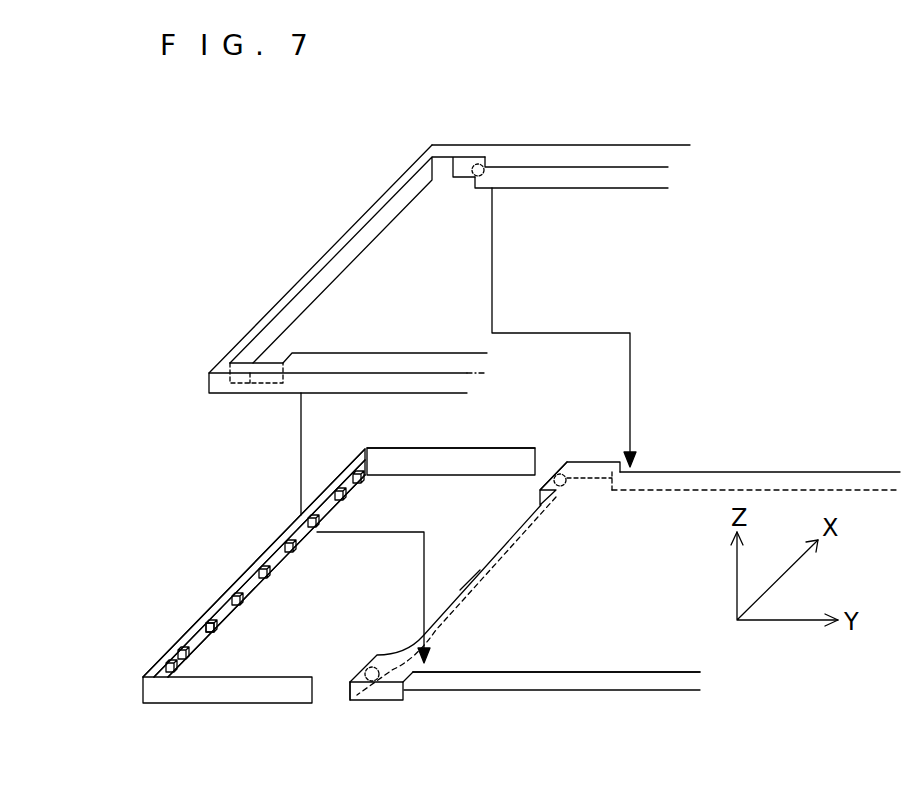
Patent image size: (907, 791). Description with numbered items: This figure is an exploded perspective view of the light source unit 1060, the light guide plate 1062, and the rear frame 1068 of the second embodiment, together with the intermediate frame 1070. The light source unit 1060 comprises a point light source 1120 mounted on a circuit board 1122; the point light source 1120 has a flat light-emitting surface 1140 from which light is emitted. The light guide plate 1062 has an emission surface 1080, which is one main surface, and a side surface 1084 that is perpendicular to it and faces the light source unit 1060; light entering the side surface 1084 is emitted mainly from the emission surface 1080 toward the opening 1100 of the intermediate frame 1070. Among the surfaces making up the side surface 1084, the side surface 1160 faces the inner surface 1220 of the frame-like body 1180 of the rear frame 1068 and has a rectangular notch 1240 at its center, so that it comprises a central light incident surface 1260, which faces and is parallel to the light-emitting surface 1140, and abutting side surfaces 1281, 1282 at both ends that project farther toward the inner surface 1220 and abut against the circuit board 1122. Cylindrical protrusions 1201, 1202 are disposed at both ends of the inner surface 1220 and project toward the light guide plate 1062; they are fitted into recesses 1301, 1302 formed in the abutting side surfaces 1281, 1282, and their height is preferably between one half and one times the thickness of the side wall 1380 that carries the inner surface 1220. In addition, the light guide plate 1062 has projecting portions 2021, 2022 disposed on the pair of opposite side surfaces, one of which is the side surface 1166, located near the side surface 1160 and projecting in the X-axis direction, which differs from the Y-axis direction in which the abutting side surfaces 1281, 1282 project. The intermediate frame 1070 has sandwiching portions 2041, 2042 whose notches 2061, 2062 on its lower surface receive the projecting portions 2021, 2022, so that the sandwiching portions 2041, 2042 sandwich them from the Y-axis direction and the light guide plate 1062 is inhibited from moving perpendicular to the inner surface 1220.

The intermediate frame 1070 is at (625, 145).
The opening 1100 is at (620, 188).
The sandwiching portion 2041 is at (444, 190).
The notch 2061 is at (475, 168).
The sandwiching portion 2042 is at (286, 348).
The notch 2062 is at (286, 352).
The frame-like body 1180 is at (405, 448).
The rear frame 1068 is at (470, 448).
The abutting side surface 1281 is at (556, 452).
The projecting portion 2021 is at (590, 460).
The light guide plate 1062 is at (833, 470).
The recess 1301 is at (566, 485).
The protrusion 1201 is at (365, 476).
The side surface 1160 is at (515, 517).
The light incident surface 1260 is at (502, 535).
The notch 1240 is at (463, 587).
The inner surface 1220 is at (265, 550).
The light source unit 1060 is at (236, 563).
The side wall 1380 is at (218, 602).
The circuit board 1122 is at (195, 632).
The point light source 1120 is at (230, 603).
The light-emitting surface 1140 is at (215, 626).
The protrusion 1202 is at (183, 670).
The recess 1302 is at (377, 667).
The emission surface 1080 is at (635, 593).
The abutting side surface 1282 is at (341, 702).
The projecting portion 2022 is at (377, 702).
The side surface 1166 is at (563, 690).
The side surface 1084 is at (628, 690).